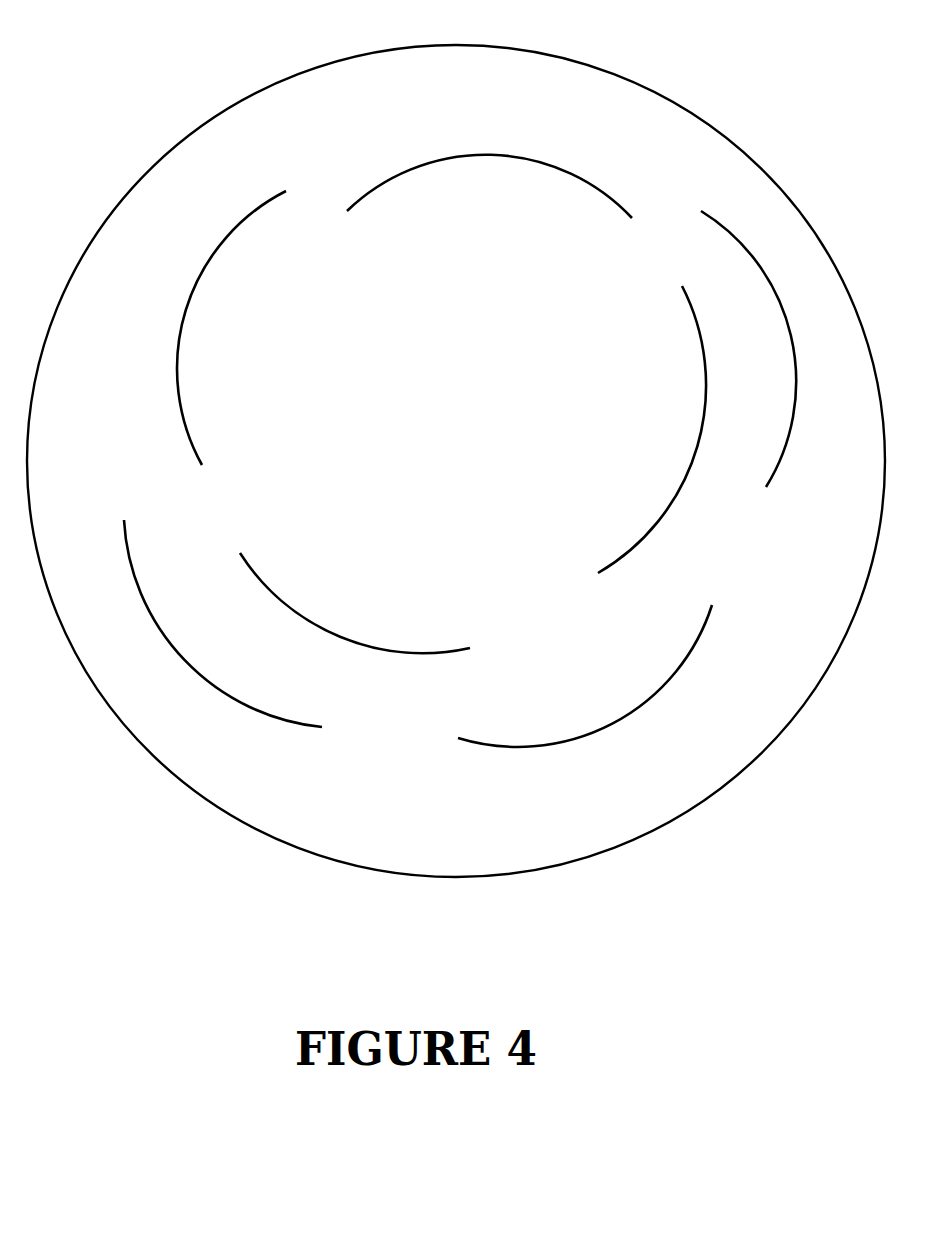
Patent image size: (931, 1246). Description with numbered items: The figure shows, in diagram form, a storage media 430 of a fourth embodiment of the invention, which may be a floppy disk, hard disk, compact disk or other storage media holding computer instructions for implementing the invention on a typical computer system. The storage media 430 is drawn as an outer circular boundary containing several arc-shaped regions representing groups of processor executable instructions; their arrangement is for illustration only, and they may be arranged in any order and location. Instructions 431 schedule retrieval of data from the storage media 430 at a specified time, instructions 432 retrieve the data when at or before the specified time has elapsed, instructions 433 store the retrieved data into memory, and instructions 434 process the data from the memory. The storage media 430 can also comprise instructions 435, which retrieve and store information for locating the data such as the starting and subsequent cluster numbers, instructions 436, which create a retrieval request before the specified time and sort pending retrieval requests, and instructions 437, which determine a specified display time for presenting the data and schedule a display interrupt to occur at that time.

The storage media 430 is at (456, 461).
The instructions 431 is at (231, 347).
The instructions 432 is at (380, 606).
The instructions 433 is at (511, 211).
The instructions 434 is at (630, 445).
The instructions 435 is at (748, 369).
The instructions 436 is at (596, 660).
The instructions 437 is at (246, 629).